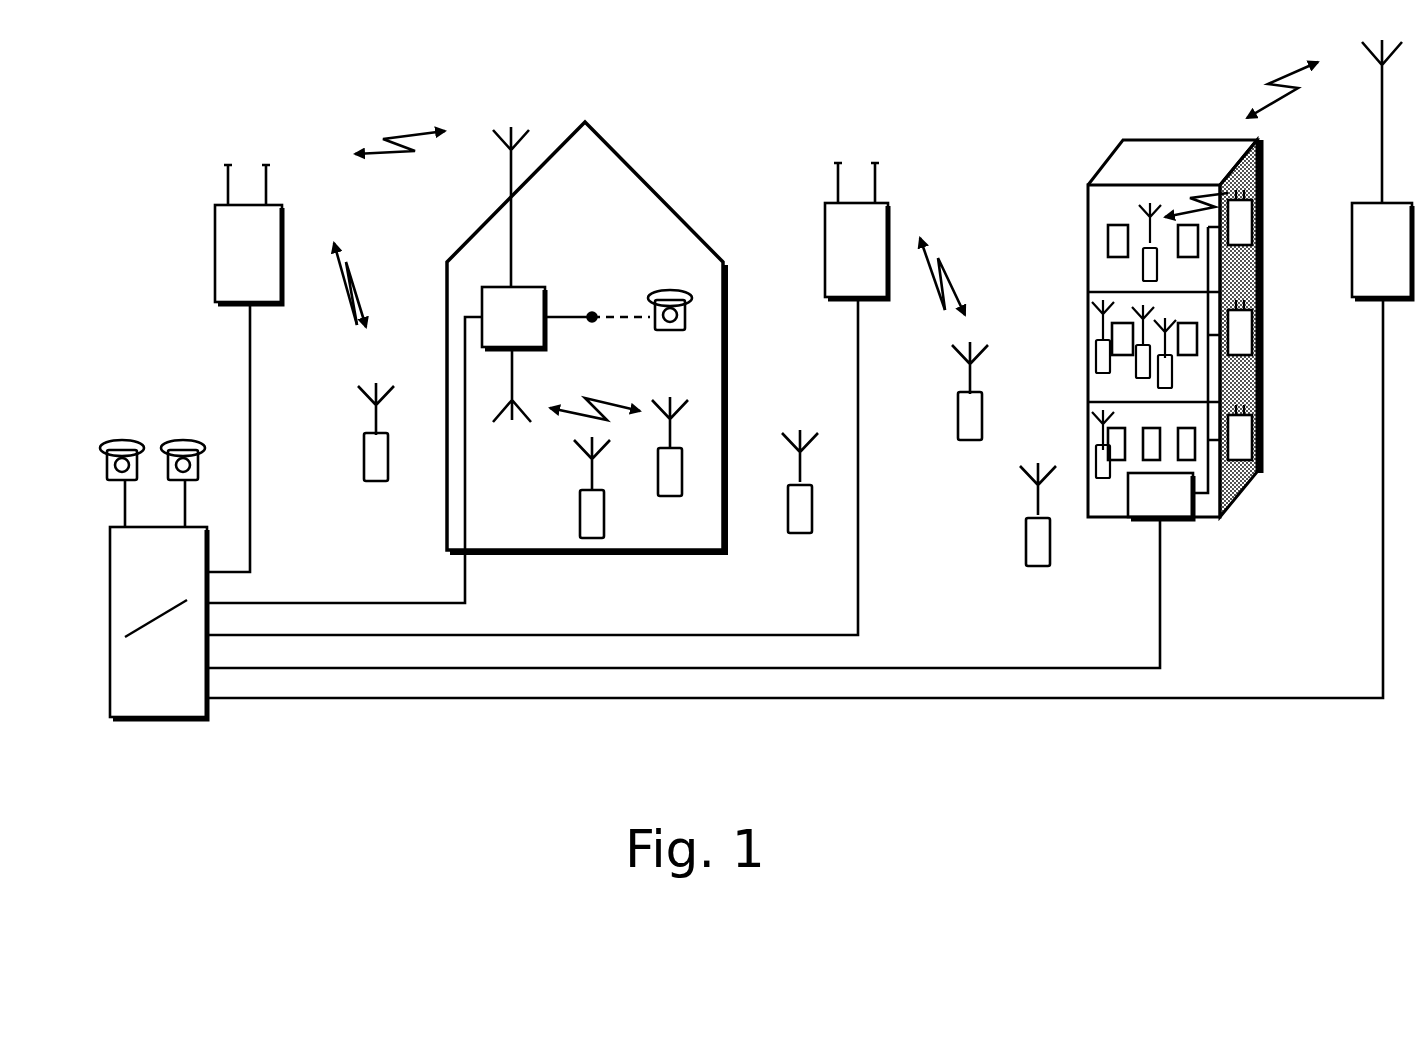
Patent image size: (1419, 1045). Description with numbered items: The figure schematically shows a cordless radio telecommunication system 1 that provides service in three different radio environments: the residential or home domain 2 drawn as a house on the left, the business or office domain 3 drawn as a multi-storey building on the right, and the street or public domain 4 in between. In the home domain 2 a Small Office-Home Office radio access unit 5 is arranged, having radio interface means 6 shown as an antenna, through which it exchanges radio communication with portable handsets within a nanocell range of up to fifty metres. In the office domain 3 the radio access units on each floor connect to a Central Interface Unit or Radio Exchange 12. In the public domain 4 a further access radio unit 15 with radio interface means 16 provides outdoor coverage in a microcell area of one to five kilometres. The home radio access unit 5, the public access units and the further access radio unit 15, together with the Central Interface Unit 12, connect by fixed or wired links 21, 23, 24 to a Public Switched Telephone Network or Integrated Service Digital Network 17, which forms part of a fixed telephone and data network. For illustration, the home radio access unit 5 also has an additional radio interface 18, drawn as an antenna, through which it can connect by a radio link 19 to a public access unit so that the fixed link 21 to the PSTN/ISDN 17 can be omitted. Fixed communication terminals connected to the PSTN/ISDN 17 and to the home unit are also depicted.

The cordless radio telecommunication system 1 is at (929, 767).
The residential or home domain 2 is at (507, 493).
The business or office domain 3 is at (1160, 172).
The public domain 4 is at (900, 510).
The Small Office-Home Office radio access unit 5 is at (530, 290).
The radio interface means 6 is at (511, 380).
The Central Interface Unit or Radio Exchange 12 is at (1172, 500).
The further access radio unit 15 is at (1366, 266).
The radio interface means 16 is at (1382, 122).
The Public Switched Telephone Network or Integrated Service Digital Network 17 is at (150, 706).
The additional radio interface 18 is at (508, 188).
The radio link 19 is at (383, 144).
The fixed or wired link 21 is at (335, 603).
The fixed or wired link 23 is at (1280, 698).
The fixed or wired link 24 is at (1035, 668).